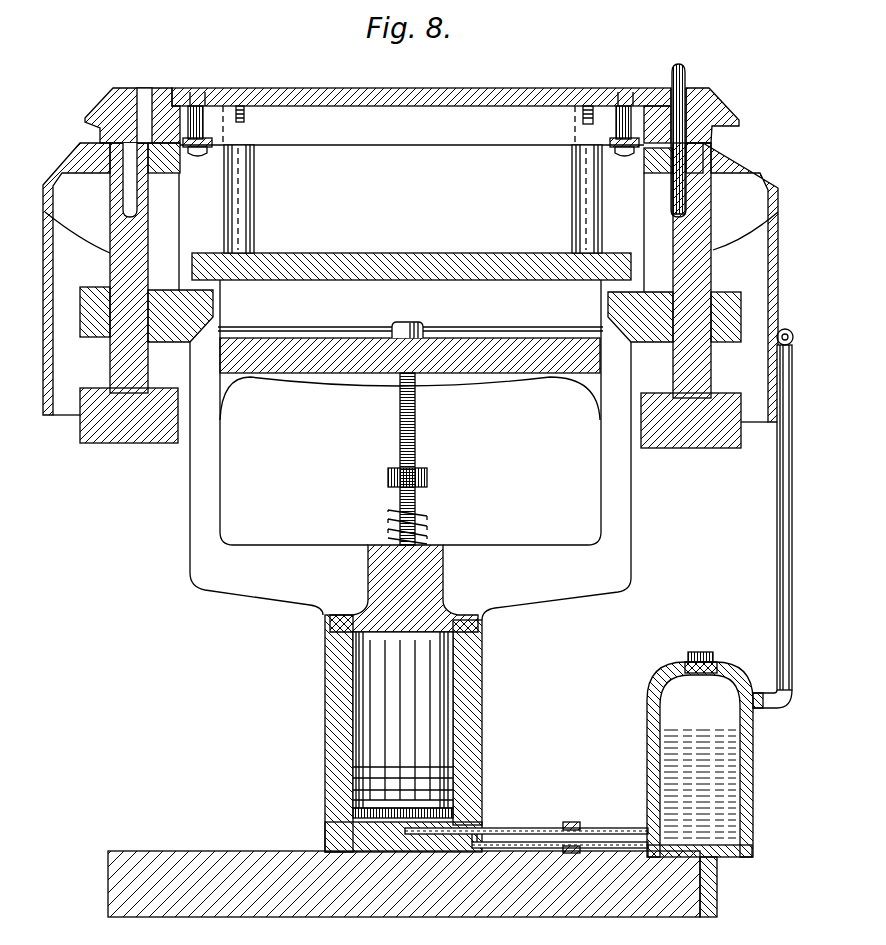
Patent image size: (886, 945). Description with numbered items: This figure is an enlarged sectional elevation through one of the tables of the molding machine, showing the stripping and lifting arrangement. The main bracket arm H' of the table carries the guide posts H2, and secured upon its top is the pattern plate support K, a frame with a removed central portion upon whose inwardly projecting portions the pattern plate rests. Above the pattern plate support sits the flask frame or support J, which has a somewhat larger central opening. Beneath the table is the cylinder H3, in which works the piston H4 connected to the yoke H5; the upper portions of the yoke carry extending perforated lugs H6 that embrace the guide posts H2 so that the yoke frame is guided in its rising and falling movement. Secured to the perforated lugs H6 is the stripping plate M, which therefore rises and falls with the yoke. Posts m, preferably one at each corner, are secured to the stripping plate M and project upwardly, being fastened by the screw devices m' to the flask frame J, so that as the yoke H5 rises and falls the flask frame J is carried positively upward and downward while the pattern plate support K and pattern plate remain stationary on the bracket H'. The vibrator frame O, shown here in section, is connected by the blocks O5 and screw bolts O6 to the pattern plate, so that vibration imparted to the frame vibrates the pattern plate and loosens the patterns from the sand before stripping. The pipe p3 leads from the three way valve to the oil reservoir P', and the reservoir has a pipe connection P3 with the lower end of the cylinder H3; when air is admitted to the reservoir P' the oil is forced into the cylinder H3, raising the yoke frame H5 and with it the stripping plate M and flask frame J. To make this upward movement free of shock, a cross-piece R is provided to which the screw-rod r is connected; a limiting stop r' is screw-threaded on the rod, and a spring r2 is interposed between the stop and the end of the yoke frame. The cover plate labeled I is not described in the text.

The cover plate I is at (484, 88).
The flask frame or support J is at (703, 88).
The pattern plate support K is at (100, 131).
The main bracket arm H' is at (404, 282).
The guide post H2 is at (115, 359).
The perforated lug H6 is at (83, 288).
The yoke H5 is at (210, 433).
The piston H4 is at (324, 703).
The cylinder H3 is at (468, 730).
The stripping plate M is at (411, 255).
The post m is at (413, 199).
The fastening or screw device m' is at (408, 102).
The vibrator frame O is at (211, 152).
The block O5 is at (207, 118).
The screw bolt O6 is at (194, 88).
The cross-piece R is at (467, 374).
The screw-rod r is at (388, 459).
The limiting stop r' is at (422, 466).
The spring r2 is at (388, 525).
The oil reservoir P' is at (682, 753).
The pipe connection P3 is at (603, 828).
The pipe p3 is at (777, 519).